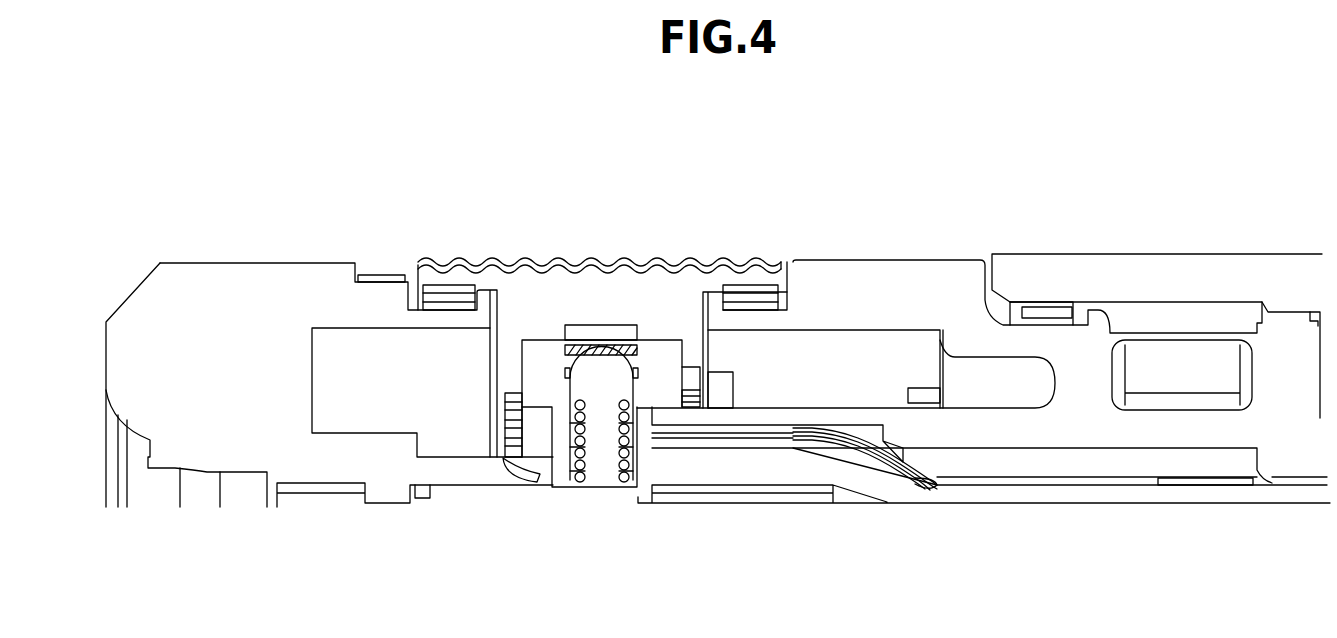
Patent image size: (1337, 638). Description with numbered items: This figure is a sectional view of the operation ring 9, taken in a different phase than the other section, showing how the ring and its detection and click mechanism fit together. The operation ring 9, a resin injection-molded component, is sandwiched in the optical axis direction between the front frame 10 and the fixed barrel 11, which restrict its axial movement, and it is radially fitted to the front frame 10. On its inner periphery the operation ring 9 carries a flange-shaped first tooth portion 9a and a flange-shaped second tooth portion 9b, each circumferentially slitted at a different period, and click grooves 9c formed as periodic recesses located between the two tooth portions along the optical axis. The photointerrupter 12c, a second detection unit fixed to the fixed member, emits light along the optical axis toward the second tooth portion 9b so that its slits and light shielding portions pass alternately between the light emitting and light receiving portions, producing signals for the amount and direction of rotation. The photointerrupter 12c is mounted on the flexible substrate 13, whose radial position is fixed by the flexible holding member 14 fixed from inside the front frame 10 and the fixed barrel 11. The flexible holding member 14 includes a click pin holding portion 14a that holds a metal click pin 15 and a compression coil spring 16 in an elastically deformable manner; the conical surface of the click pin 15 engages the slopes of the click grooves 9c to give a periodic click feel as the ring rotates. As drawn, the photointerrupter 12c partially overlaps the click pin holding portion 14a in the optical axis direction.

The operation ring 9 is at (497, 160).
The first tooth portion 9a is at (512, 377).
The second tooth portion 9b is at (697, 357).
The click grooves 9c is at (600, 333).
The front frame 10 is at (240, 305).
The fixed barrel 11 is at (1077, 362).
The photointerrupter 12c is at (720, 400).
The flexible substrate 13 is at (773, 437).
The flexible holding member 14 is at (733, 473).
The click pin holding portion 14a is at (563, 437).
The click pin 15 is at (605, 388).
The compression coil spring 16 is at (633, 470).